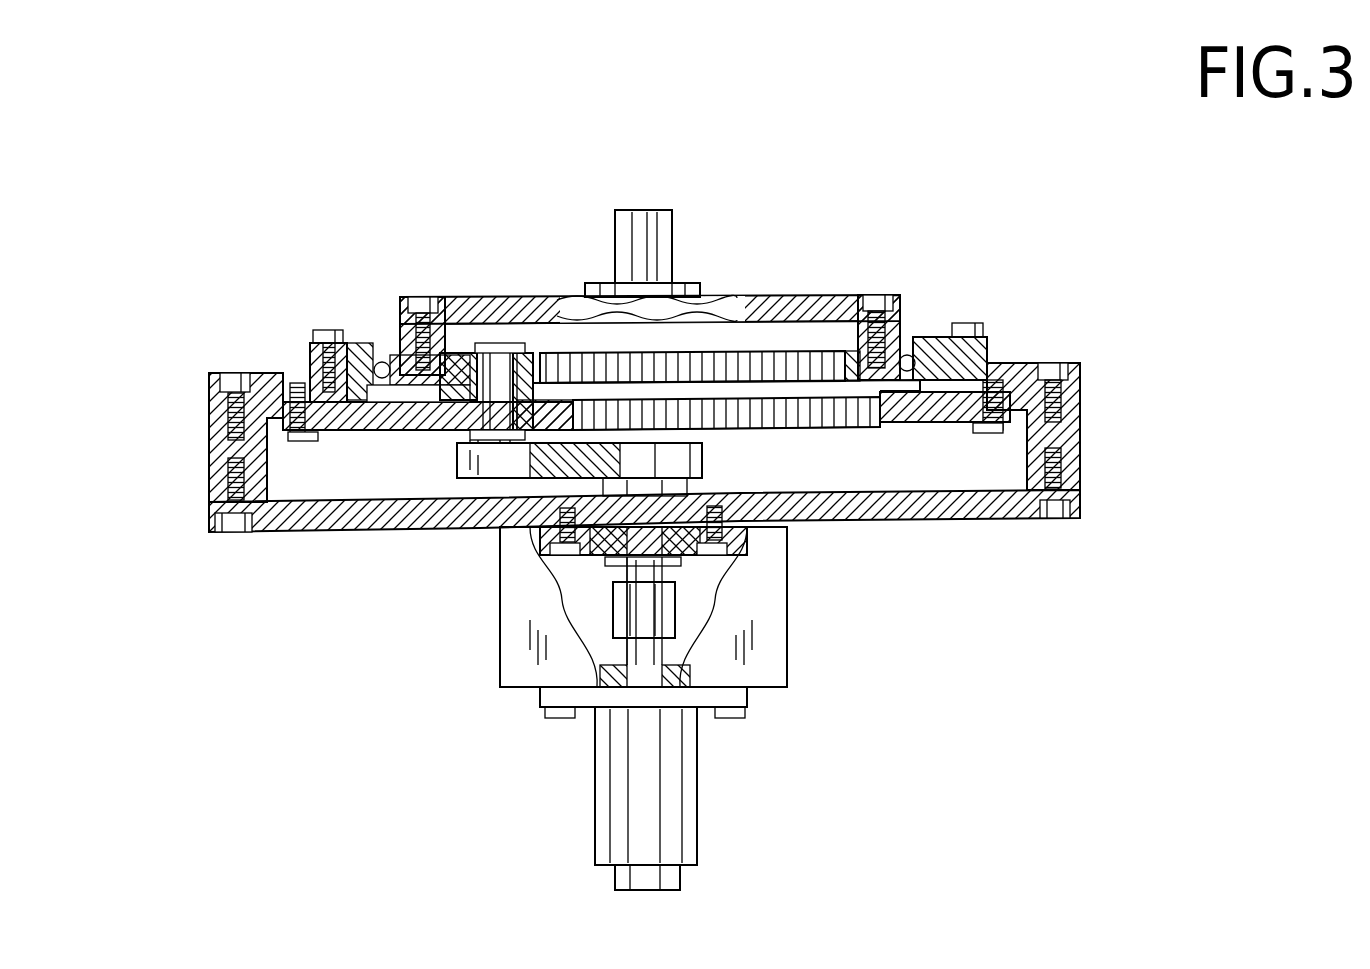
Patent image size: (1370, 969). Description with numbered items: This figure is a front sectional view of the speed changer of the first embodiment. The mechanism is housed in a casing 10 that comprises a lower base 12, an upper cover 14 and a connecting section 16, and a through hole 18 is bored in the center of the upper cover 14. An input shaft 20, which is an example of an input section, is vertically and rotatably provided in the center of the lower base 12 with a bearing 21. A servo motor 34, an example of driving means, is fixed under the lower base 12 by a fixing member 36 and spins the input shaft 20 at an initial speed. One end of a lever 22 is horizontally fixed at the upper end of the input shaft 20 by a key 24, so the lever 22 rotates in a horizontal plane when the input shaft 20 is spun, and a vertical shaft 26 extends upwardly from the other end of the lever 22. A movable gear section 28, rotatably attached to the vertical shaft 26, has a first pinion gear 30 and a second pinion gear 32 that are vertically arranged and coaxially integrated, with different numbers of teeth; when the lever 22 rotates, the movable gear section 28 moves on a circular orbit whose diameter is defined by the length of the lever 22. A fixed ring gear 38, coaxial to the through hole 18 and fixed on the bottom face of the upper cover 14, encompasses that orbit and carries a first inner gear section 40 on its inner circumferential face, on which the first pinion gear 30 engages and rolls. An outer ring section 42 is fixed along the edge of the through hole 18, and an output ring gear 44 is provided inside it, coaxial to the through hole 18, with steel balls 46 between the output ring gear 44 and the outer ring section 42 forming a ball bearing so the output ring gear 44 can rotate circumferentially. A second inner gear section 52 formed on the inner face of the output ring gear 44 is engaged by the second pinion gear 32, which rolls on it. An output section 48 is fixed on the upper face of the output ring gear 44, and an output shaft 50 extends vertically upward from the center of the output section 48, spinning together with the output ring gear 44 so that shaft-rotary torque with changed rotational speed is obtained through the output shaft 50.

The casing 10 is at (1085, 463).
The lower base 12 is at (270, 536).
The upper cover 14 is at (1078, 362).
The connecting section 16 is at (207, 448).
The through hole 18 is at (372, 434).
The input shaft 20 is at (590, 552).
The bearing 21 is at (672, 530).
The lever 22 is at (457, 465).
The key 24 is at (808, 350).
The vertical shaft 26 is at (498, 352).
The movable gear section 28 is at (537, 345).
The first pinion gear 30 is at (433, 440).
The second pinion gear 32 is at (460, 355).
The servo motor 34 is at (680, 830).
The fixing member 36 is at (787, 638).
The fixed ring gear 38 is at (960, 434).
The first inner gear section 40 is at (847, 418).
The outer ring section 42 is at (358, 348).
The output ring gear 44 is at (644, 445).
The steel balls 46 is at (388, 352).
The output section 48 is at (662, 363).
The output shaft 50 is at (655, 212).
The second inner gear section 52 is at (733, 293).